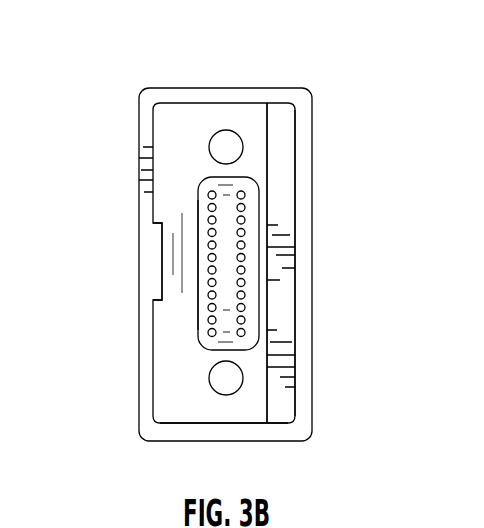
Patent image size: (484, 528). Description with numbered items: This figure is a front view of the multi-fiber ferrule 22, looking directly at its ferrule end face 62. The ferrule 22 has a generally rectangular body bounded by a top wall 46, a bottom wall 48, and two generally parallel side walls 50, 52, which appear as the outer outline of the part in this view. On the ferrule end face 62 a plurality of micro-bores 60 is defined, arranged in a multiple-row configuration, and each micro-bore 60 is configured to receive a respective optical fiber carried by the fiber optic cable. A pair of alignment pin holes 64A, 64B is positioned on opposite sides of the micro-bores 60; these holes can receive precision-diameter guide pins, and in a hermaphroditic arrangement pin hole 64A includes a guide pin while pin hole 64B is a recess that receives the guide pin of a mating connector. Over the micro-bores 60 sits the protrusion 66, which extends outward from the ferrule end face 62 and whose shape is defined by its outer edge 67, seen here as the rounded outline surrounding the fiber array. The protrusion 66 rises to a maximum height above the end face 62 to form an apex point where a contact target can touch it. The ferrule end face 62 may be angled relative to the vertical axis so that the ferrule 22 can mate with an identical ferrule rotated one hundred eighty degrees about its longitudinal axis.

The ferrule 22 is at (148, 56).
The side wall 50 is at (199, 103).
The top wall 46 is at (153, 205).
The protrusion 66 is at (188, 168).
The micro-bores 60 is at (250, 250).
The outer edge 67 is at (200, 313).
The alignment pin hole 64B is at (244, 147).
The alignment pin hole 64A is at (244, 378).
The bottom wall 48 is at (297, 263).
The ferrule end face 62 is at (276, 318).
The side wall 52 is at (202, 423).